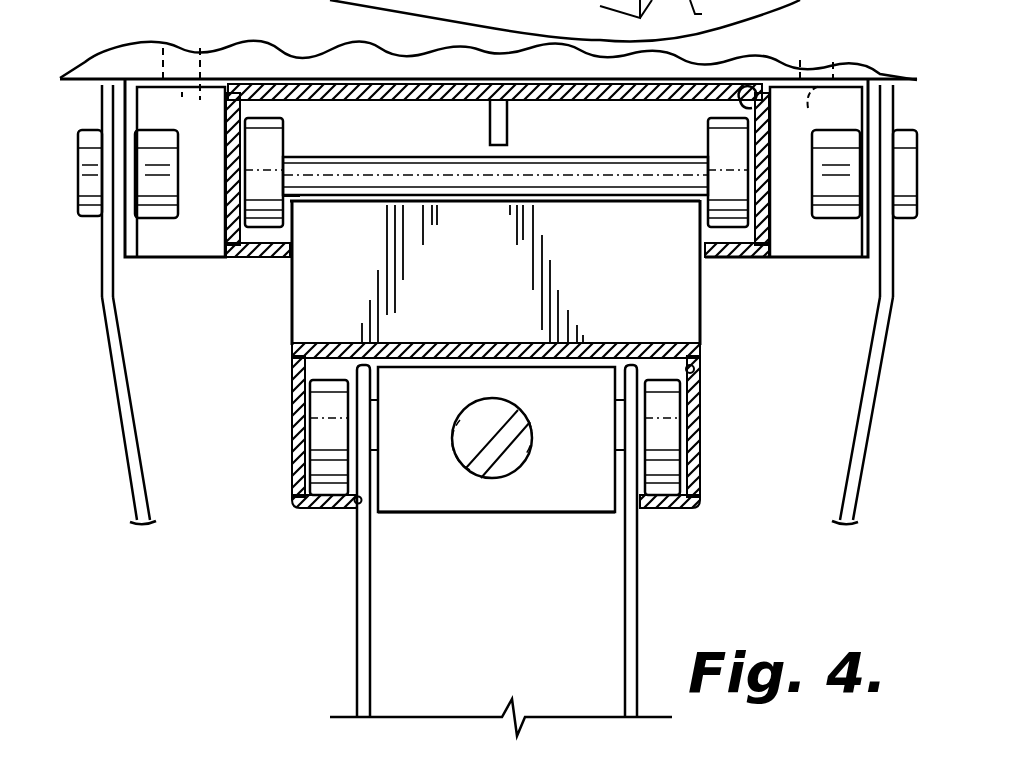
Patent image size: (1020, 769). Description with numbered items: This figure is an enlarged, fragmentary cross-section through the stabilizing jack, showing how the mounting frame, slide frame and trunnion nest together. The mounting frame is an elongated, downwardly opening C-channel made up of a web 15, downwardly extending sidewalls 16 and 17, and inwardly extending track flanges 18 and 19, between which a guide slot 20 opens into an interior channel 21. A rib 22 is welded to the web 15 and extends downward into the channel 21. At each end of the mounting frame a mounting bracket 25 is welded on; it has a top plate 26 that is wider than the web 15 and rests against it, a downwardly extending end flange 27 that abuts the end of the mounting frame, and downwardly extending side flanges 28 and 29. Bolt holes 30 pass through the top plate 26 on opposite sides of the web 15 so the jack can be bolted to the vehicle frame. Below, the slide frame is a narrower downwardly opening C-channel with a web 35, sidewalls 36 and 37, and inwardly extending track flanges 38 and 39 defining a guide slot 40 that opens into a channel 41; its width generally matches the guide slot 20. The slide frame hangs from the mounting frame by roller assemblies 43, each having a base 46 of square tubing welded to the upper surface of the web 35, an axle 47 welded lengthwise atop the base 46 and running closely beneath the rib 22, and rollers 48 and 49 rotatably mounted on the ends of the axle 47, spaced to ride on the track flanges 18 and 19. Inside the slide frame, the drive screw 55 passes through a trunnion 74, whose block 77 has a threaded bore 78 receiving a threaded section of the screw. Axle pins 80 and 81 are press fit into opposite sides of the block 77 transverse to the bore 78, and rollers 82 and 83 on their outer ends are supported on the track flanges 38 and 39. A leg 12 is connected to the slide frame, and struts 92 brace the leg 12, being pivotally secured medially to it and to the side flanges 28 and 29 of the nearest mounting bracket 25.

The first leg 12 is at (352, 621).
The web 15 is at (316, 92).
The sidewall 16 is at (224, 180).
The sidewall 17 is at (770, 155).
The track flange 18 is at (258, 252).
The track flange 19 is at (728, 258).
The guide slot 20 is at (700, 252).
The channel 21 is at (750, 97).
The rib 22 is at (507, 122).
The mounting bracket 25 is at (112, 88).
The top plate 26 is at (233, 78).
The end flange 27 is at (170, 245).
The side flange 28 is at (112, 104).
The side flange 29 is at (890, 112).
The bolt holes 30 is at (499, 172).
The web 35 is at (668, 340).
The sidewall 36 is at (292, 432).
The sidewall 37 is at (700, 427).
The track flange 38 is at (308, 510).
The track flange 39 is at (672, 500).
The guide slot 40 is at (356, 508).
The channel 41 is at (694, 372).
The roller assembly 43 is at (458, 150).
The base 46 is at (489, 280).
The axle 47 is at (343, 203).
The roller 48 is at (285, 140).
The roller 49 is at (706, 133).
The drive screw 55 is at (535, 435).
The first trunnion 74 is at (410, 520).
The block 77 is at (548, 510).
The threaded bore 78 is at (470, 455).
The first axle pin 80 is at (380, 394).
The second axle pin 81 is at (642, 412).
The first roller 82 is at (318, 395).
The second roller 83 is at (700, 462).
The strut 92 is at (118, 408).